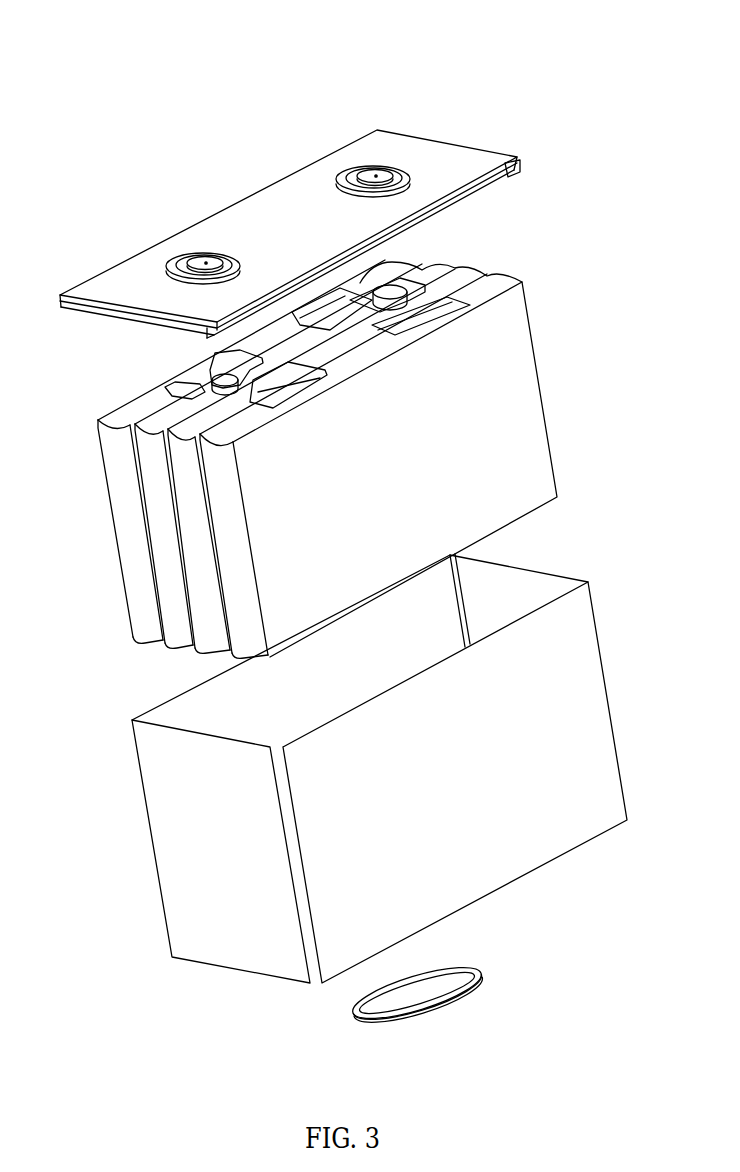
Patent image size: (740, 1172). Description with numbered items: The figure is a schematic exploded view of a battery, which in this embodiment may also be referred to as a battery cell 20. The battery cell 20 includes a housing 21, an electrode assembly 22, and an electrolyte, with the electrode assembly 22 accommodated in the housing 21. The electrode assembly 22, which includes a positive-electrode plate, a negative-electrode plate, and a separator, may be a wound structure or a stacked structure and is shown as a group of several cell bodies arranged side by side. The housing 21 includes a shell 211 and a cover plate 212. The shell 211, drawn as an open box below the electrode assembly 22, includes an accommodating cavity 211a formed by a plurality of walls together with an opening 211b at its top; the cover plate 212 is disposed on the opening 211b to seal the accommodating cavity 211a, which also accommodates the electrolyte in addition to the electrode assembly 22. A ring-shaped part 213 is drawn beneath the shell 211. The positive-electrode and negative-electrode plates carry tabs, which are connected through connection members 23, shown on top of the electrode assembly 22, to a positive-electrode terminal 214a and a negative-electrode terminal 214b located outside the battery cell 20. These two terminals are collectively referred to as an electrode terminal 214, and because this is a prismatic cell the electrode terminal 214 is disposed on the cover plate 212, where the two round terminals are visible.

The battery cell 20 is at (363, 72).
The housing 21 is at (288, 217).
The electrode assembly 22 is at (98, 430).
The connection members 23 is at (190, 387).
The shell 211 is at (361, 751).
The accommodating cavity 211a is at (177, 720).
The opening 211b is at (562, 573).
The cover plate 212 is at (122, 272).
The seal ring 213 is at (437, 1010).
The electrode terminal 214 is at (256, 190).
The positive-electrode terminal 214a is at (190, 252).
The negative-electrode terminal 214b is at (339, 150).